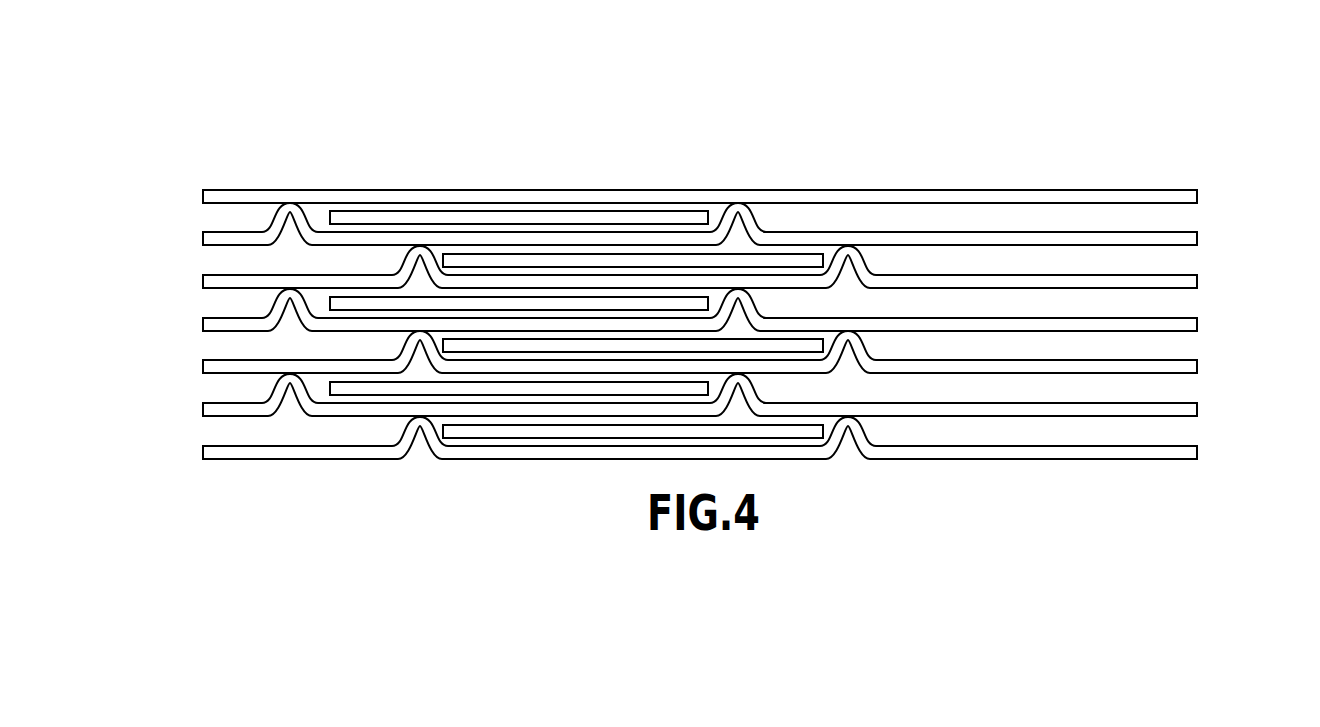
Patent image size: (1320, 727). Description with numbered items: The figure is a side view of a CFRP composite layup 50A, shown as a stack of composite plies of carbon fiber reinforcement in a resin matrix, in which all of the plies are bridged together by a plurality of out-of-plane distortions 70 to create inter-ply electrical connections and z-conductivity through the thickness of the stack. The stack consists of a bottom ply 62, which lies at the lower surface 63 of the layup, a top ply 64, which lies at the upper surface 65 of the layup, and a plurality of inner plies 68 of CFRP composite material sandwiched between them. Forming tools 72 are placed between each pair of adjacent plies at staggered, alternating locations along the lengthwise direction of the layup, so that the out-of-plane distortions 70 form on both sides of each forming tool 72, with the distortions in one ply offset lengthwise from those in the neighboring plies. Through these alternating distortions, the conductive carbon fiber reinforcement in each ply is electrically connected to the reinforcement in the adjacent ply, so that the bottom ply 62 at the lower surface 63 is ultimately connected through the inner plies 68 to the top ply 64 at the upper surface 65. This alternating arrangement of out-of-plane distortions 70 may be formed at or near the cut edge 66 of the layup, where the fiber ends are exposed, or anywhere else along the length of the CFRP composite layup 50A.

The CFRP composite layup 50A is at (1002, 96).
The bottom ply 62 is at (1055, 452).
The lower surface 63 is at (913, 462).
The top ply 64 is at (1100, 193).
The upper surface 65 is at (956, 190).
The cut edge 66 is at (203, 322).
The inner plies 68 is at (1197, 237).
The out-of-plane distortions 70 is at (730, 300).
The forming tools 72 is at (482, 255).